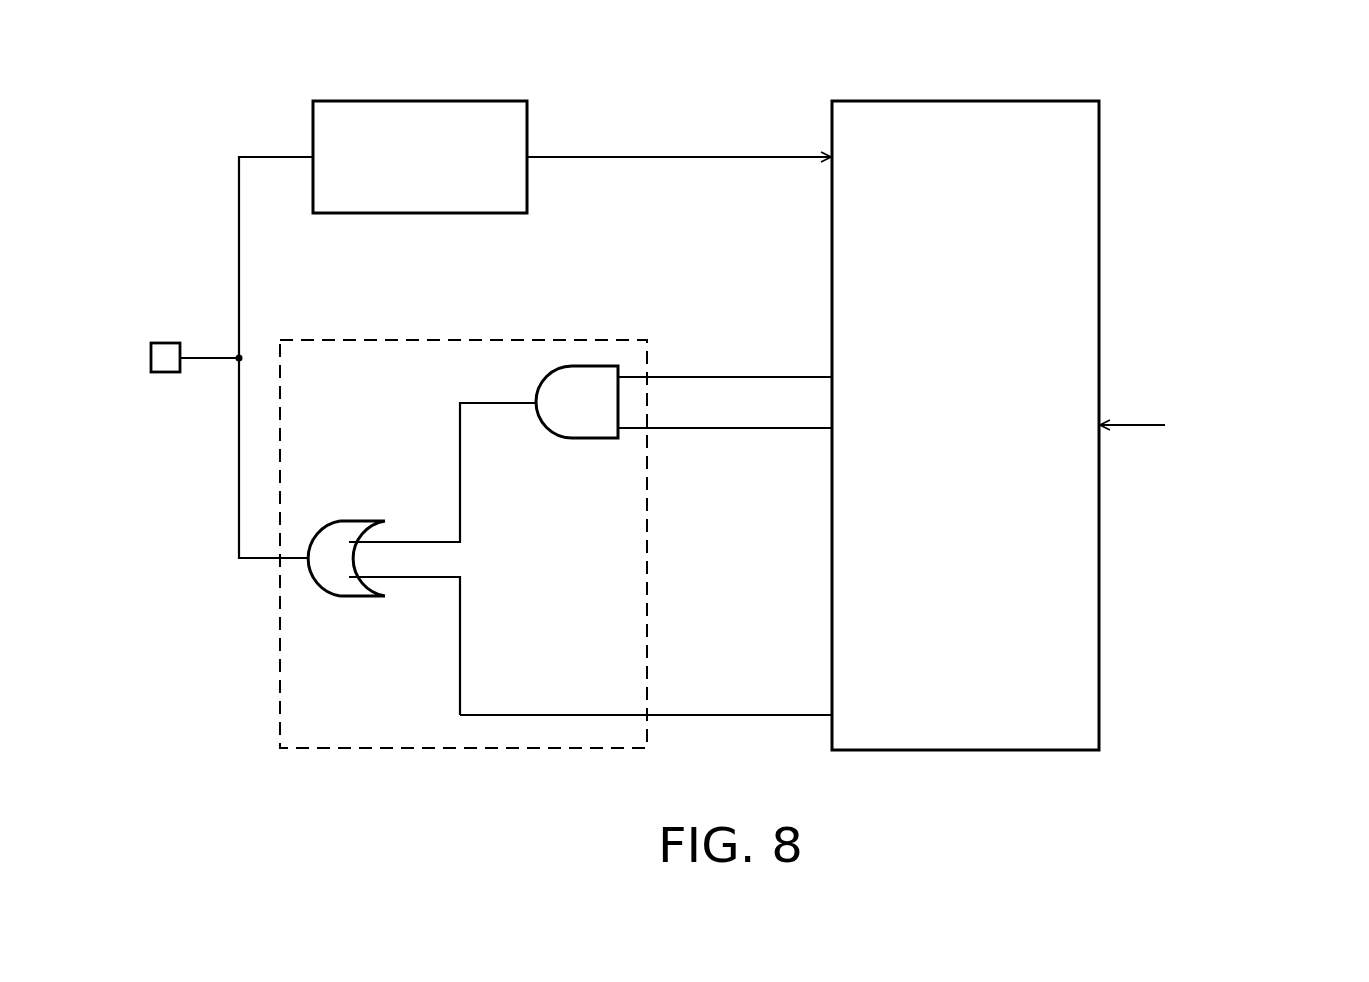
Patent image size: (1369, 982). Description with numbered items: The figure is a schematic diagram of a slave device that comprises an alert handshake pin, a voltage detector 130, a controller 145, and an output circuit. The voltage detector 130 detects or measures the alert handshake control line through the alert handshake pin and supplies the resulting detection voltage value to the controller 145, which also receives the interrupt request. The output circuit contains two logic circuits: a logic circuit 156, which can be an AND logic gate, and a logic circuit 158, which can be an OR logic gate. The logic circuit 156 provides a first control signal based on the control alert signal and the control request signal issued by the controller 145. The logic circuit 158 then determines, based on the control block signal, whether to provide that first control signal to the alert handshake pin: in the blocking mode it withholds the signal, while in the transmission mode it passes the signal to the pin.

The voltage detector 130 is at (318, 100).
The controller 145 is at (836, 100).
The logic circuit 156 is at (585, 440).
The logic circuit 158 is at (345, 520).